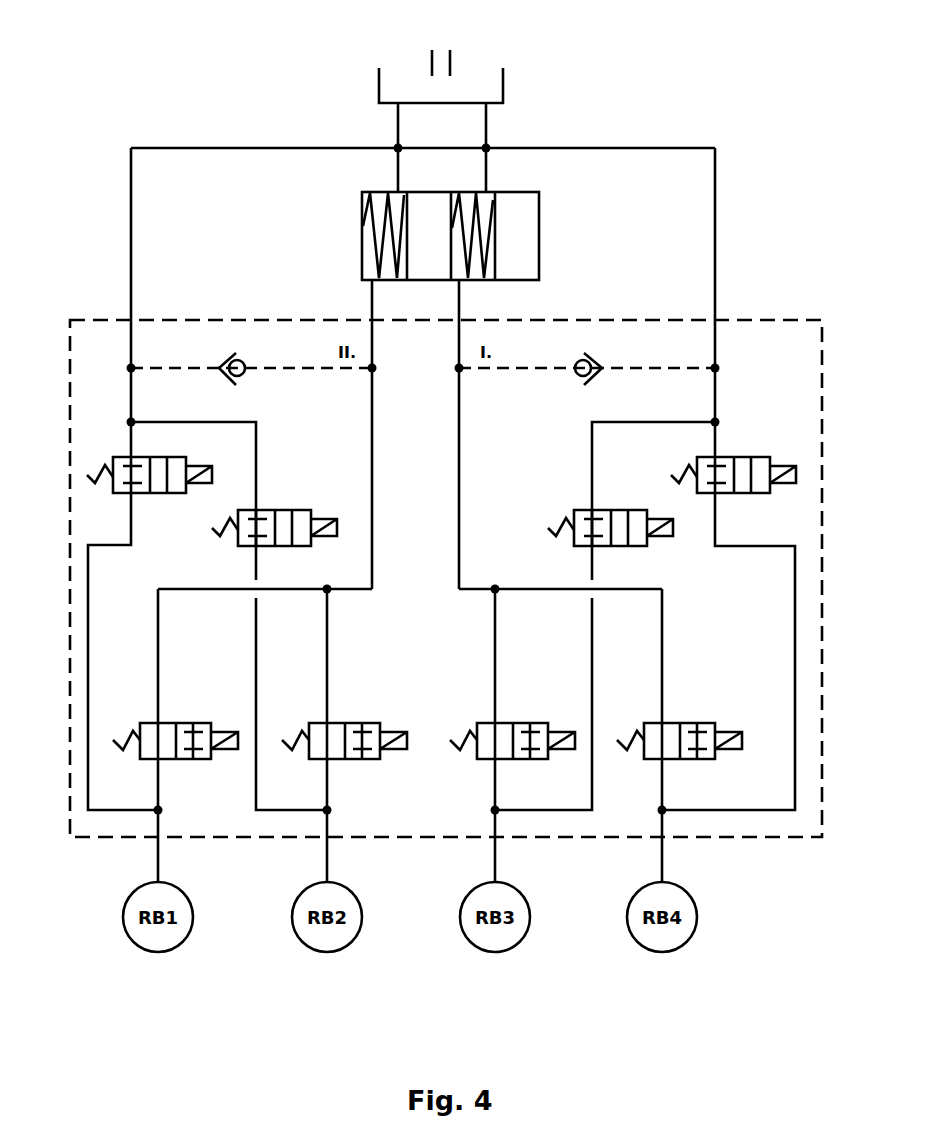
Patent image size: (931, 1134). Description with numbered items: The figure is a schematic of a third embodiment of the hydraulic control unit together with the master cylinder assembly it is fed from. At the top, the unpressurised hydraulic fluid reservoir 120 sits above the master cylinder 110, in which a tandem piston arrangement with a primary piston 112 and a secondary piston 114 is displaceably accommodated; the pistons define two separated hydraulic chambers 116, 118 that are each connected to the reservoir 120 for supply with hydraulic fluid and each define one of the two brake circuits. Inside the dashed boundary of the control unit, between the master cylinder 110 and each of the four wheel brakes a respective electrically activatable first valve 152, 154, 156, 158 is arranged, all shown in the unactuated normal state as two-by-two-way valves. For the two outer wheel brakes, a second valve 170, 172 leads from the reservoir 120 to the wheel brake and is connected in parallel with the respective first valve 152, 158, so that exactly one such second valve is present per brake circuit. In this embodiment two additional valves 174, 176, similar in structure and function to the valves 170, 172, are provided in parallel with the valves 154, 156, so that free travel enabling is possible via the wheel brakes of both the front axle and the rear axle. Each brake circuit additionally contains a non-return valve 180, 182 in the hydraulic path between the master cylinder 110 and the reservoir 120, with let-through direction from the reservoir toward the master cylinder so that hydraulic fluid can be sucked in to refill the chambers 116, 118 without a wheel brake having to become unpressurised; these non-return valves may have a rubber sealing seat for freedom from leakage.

The master cylinder 110 is at (472, 210).
The primary piston 112 is at (531, 247).
The secondary piston 114 is at (445, 247).
The hydraulic chamber 116 is at (478, 202).
The hydraulic chamber 118 is at (372, 230).
The hydraulic fluid reservoir 120 is at (480, 63).
The first valve 152 is at (177, 723).
The first valve 154 is at (360, 723).
The first valve 156 is at (530, 723).
The first valve 158 is at (698, 723).
The second valve 170 is at (157, 493).
The second valve 172 is at (733, 493).
The additional valve 174 is at (293, 510).
The additional valve 176 is at (628, 510).
The non-return valve 180 is at (245, 375).
The non-return valve 182 is at (573, 376).